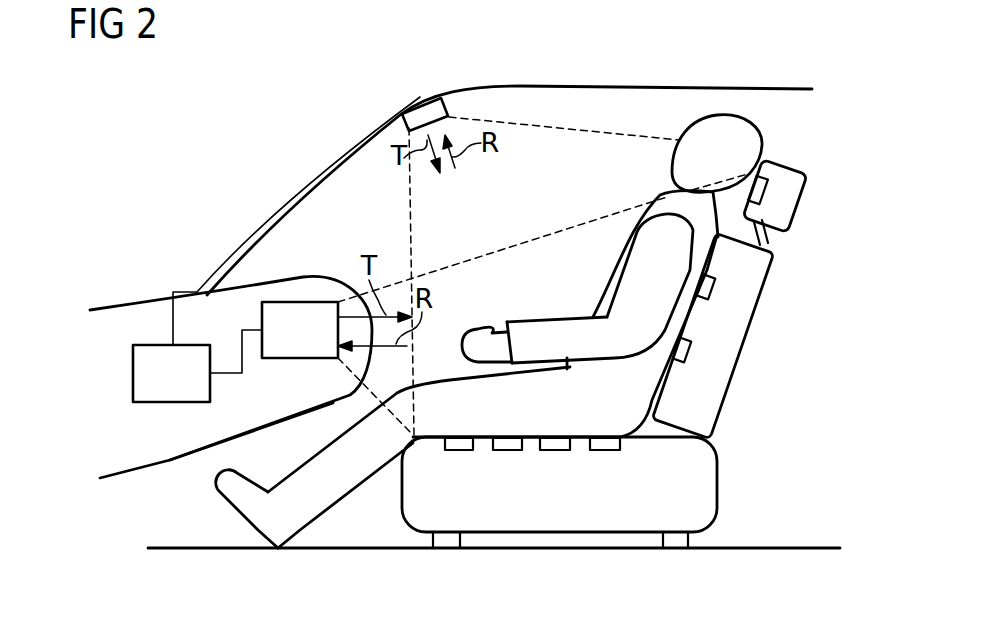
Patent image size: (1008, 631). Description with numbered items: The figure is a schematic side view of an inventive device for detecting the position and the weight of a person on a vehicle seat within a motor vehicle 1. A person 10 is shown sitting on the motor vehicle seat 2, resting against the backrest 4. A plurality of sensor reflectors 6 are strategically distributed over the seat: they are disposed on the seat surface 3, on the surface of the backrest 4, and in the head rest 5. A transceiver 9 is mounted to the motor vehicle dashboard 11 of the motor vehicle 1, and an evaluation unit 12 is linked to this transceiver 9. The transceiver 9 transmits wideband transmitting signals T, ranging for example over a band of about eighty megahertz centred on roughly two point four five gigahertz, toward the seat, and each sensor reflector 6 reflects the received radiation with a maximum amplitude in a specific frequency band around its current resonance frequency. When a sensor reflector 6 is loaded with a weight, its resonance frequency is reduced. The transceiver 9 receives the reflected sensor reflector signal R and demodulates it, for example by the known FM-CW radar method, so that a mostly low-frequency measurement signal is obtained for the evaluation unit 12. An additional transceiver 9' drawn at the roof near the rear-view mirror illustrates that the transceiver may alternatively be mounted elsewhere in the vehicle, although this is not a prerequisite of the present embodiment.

The motor vehicle 1 is at (230, 207).
The motor vehicle seat 2 is at (637, 335).
The seat surface 3 is at (642, 445).
The backrest 4 is at (715, 245).
The head rest 5 is at (804, 210).
The sensor reflectors 6 is at (506, 451).
The transceiver 9 is at (300, 360).
The additional transceiver 9' is at (427, 84).
The person 10 is at (622, 258).
The motor vehicle dashboard 11 is at (197, 445).
The evaluation unit 12 is at (132, 373).